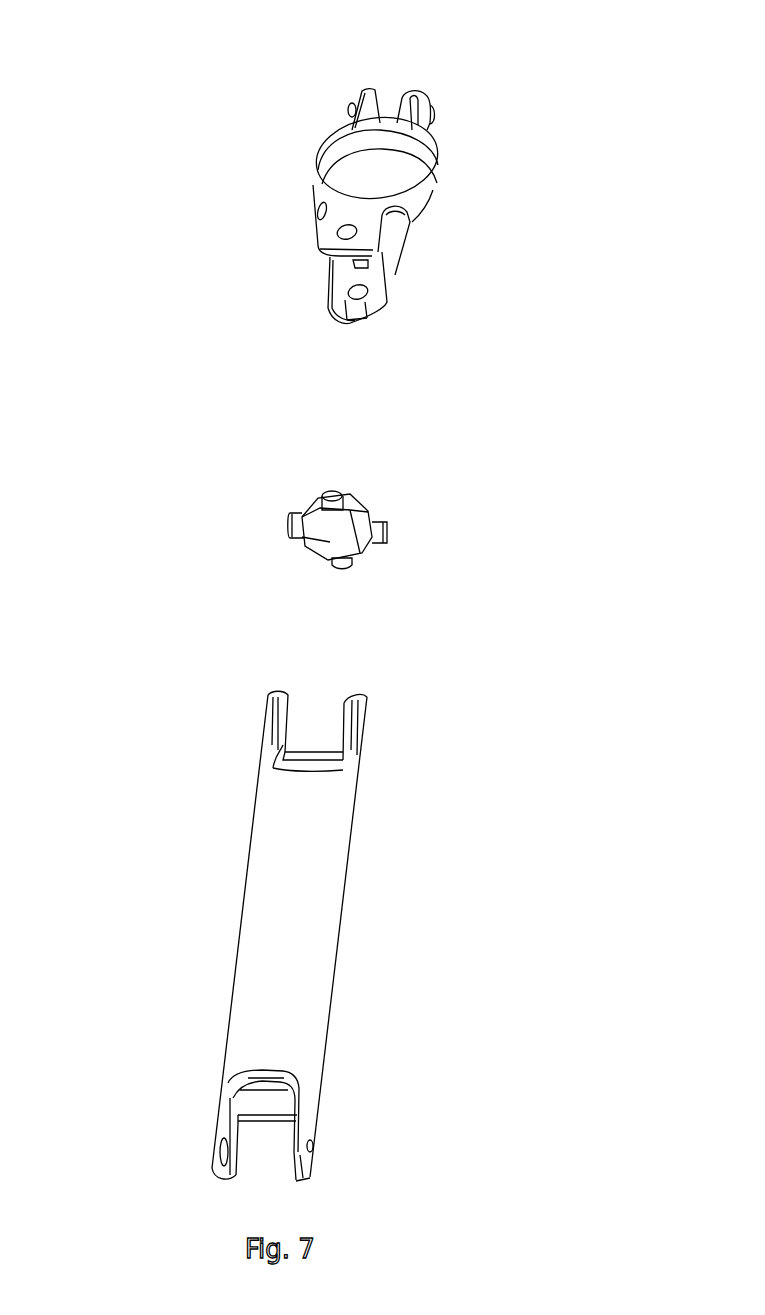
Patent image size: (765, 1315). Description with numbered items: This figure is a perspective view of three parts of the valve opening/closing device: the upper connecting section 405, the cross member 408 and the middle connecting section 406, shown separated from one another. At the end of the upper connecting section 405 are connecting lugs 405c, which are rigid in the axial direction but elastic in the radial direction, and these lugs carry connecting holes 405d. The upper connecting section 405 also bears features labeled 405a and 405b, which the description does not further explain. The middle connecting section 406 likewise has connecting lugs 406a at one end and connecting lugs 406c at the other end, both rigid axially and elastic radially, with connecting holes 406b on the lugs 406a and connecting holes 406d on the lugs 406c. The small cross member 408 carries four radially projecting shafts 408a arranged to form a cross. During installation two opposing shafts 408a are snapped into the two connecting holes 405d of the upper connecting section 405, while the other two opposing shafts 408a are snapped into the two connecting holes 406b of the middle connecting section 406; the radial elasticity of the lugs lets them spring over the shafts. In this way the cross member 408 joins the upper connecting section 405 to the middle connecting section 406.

The upper connecting section 405 is at (400, 218).
The clamping prongs 405a is at (350, 102).
The flange 405b is at (423, 157).
The connecting lugs 405c is at (340, 218).
The connecting holes 405d is at (348, 237).
The cross member 408 is at (288, 486).
The radially projecting shafts 408a is at (333, 490).
The middle connecting section 406 is at (259, 928).
The connecting lugs 406a is at (367, 700).
The connecting holes 406b is at (365, 717).
The connecting lugs 406c is at (215, 1142).
The connecting holes 406d is at (313, 1145).